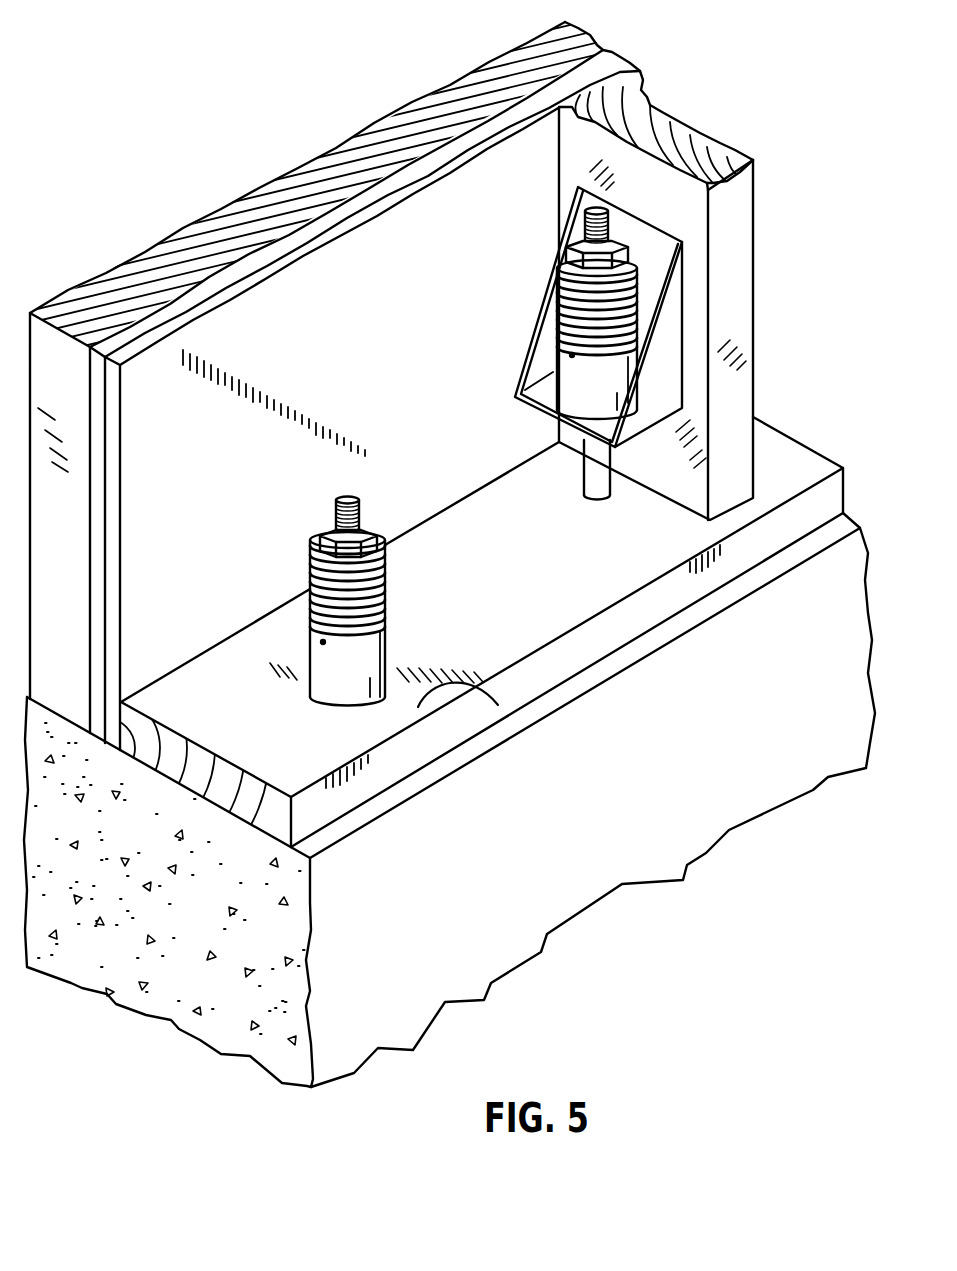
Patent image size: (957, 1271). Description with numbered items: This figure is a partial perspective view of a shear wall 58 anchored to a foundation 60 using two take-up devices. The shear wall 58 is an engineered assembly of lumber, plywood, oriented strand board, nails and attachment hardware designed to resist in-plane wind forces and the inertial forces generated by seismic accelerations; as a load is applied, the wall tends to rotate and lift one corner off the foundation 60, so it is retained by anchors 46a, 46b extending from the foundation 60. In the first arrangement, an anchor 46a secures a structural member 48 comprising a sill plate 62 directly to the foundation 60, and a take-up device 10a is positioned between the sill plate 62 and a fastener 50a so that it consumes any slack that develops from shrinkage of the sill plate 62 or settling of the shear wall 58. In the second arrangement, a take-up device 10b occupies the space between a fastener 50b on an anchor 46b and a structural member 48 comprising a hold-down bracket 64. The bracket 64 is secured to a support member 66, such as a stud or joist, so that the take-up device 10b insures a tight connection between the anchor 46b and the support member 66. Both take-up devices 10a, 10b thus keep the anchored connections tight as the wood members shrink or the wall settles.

The shear wall 58 is at (808, 50).
The foundation 60 is at (860, 585).
The sill plate 62 is at (807, 460).
The hold-down bracket 64 is at (691, 308).
The support member 66 is at (742, 324).
The structural member 48 is at (534, 397).
The take-up device 10a is at (376, 578).
The take-up device 10b is at (632, 345).
The anchor 46a is at (337, 502).
The anchor 46b is at (586, 213).
The fastener 50a is at (367, 527).
The fastener 50b is at (572, 243).